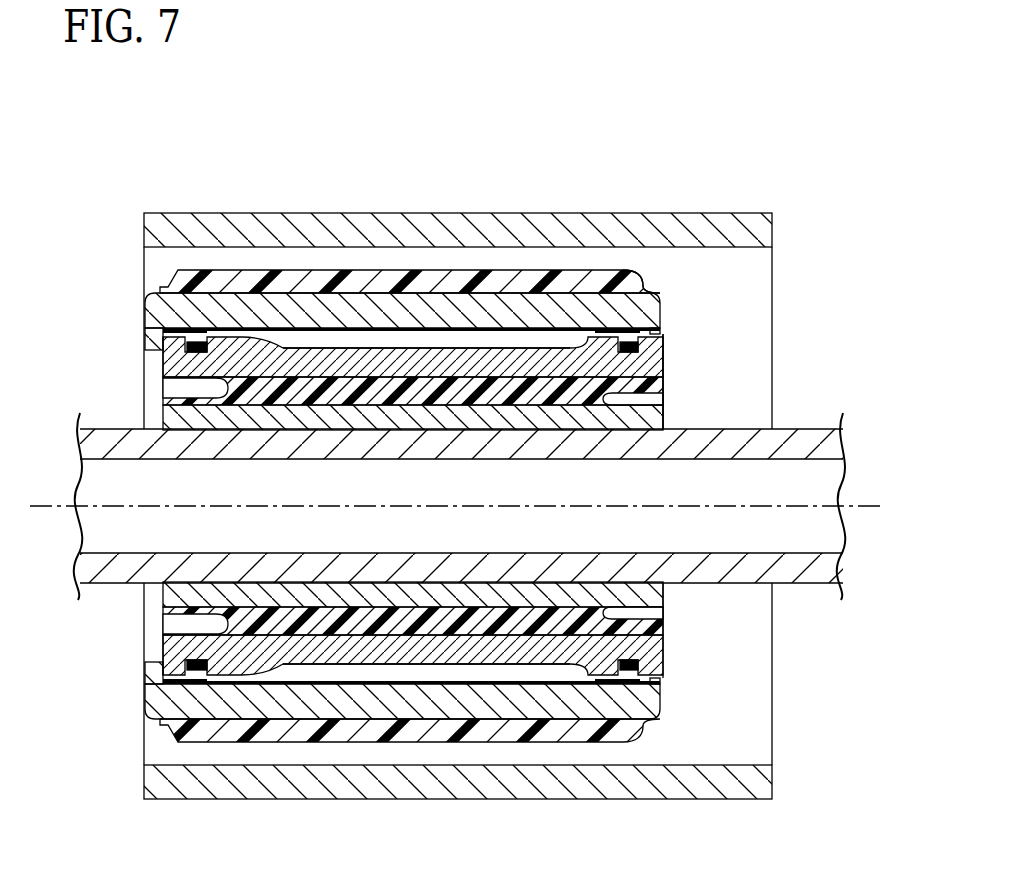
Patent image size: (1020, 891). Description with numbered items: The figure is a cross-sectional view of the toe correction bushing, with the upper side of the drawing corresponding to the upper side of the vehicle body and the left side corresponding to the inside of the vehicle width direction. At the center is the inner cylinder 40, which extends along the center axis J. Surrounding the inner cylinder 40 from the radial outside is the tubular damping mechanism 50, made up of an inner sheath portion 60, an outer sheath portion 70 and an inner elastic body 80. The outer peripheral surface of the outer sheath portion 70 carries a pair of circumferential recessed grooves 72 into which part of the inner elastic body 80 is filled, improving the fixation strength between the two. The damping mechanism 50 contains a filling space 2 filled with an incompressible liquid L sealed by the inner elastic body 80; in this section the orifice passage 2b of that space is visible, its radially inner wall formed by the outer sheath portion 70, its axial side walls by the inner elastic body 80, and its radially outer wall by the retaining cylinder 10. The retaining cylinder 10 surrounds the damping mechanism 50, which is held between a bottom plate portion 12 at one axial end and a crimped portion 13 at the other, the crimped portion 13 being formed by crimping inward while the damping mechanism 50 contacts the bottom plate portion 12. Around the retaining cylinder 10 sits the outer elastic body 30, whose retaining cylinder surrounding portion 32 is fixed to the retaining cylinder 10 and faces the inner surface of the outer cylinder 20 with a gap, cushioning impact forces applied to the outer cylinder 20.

The filling space 2 is at (340, 330).
The orifice passage 2b is at (403, 337).
The liquid L is at (478, 335).
The retaining cylinder 10 is at (663, 291).
The bottom plate portion 12 is at (153, 347).
The crimped portion 13 is at (664, 329).
The outer cylinder 20 is at (673, 212).
The outer elastic body 30 is at (622, 268).
The retaining cylinder surrounding portion 32 is at (565, 285).
The inner cylinder 40 is at (798, 575).
The damping mechanism 50 is at (714, 369).
The inner sheath portion 60 is at (668, 417).
The outer sheath portion 70 is at (163, 366).
The recessed groove 72 is at (192, 335).
The inner elastic body 80 is at (163, 401).
The center axis J is at (882, 505).